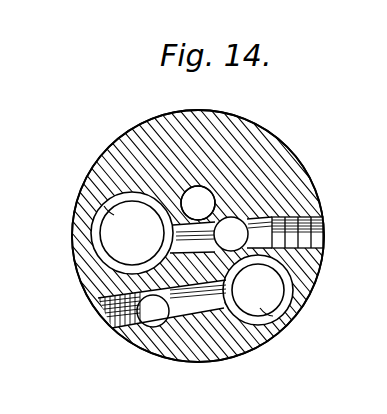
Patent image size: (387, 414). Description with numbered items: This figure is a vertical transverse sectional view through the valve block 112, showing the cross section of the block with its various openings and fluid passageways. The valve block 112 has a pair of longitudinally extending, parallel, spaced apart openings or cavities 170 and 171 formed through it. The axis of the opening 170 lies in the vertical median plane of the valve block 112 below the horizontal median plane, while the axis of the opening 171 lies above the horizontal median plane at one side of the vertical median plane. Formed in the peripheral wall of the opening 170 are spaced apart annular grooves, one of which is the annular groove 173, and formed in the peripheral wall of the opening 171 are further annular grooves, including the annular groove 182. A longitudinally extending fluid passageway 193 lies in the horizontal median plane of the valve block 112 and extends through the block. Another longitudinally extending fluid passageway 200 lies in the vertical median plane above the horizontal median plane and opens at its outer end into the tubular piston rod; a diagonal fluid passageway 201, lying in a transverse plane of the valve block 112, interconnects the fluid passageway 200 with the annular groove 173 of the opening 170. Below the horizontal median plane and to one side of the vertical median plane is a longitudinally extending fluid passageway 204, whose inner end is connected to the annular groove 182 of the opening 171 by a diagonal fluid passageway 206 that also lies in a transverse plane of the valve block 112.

The valve block 112 is at (272, 150).
The opening or cavity 170 is at (103, 206).
The annular groove 173 is at (113, 263).
The annular groove 182 is at (291, 300).
The opening or cavity 171 is at (278, 318).
The fluid passageway 193 is at (195, 186).
The diagonal fluid passageway 201 is at (216, 205).
The fluid passageway 200 is at (244, 222).
The fluid passageway 204 is at (139, 312).
The diagonal fluid passageway 206 is at (170, 318).